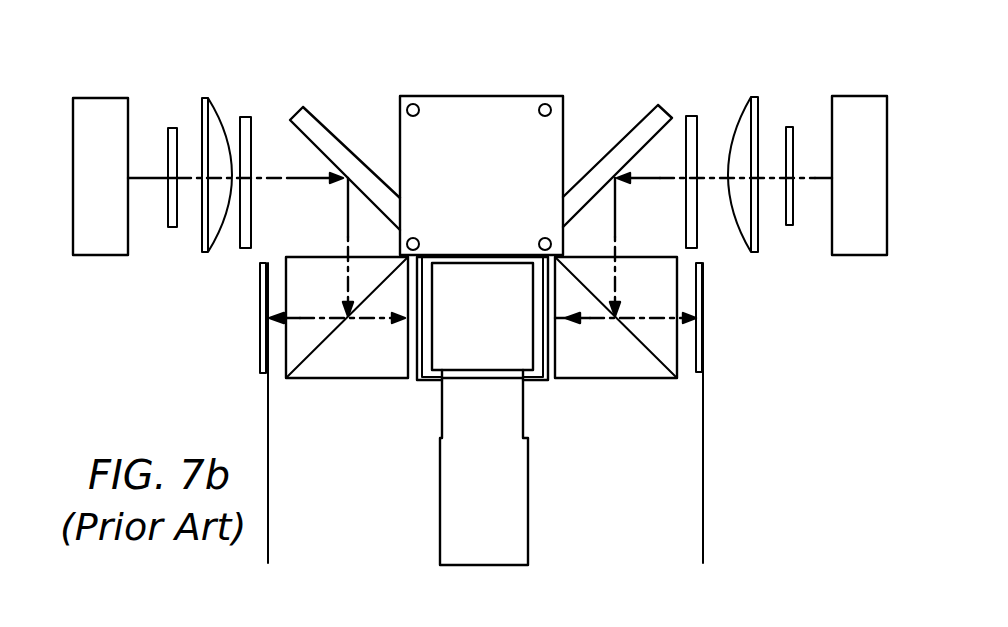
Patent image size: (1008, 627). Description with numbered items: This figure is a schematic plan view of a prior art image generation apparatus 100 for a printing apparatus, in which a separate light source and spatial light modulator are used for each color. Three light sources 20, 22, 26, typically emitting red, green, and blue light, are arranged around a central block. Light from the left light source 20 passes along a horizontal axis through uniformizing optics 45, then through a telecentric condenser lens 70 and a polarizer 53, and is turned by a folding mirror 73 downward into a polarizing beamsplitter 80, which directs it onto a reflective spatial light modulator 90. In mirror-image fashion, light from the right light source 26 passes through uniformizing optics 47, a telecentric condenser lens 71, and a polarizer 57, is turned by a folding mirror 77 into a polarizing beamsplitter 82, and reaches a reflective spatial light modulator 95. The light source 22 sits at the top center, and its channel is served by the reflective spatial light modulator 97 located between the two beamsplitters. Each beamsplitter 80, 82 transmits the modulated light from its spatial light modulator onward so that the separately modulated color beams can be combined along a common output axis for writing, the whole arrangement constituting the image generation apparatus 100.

The light source 20 is at (86, 98).
The uniformizing optics 45 is at (172, 128).
The telecentric condenser lens 70 is at (205, 252).
The polarizer 53 is at (246, 117).
The folding mirror 73 is at (312, 122).
The light source 22 is at (478, 107).
The folding mirror 77 is at (633, 127).
The polarizer 57 is at (690, 116).
The telecentric condenser lens 71 is at (752, 252).
The uniformizing optics 47 is at (788, 127).
The light source 26 is at (863, 100).
The reflective spatial light modulator 90 is at (258, 300).
The reflective spatial light modulator 95 is at (705, 338).
The polarizing beamsplitter 80 is at (364, 368).
The polarizing beamsplitter 82 is at (631, 368).
The reflective spatial light modulator 97 is at (497, 328).
The image generation apparatus 100 is at (730, 462).